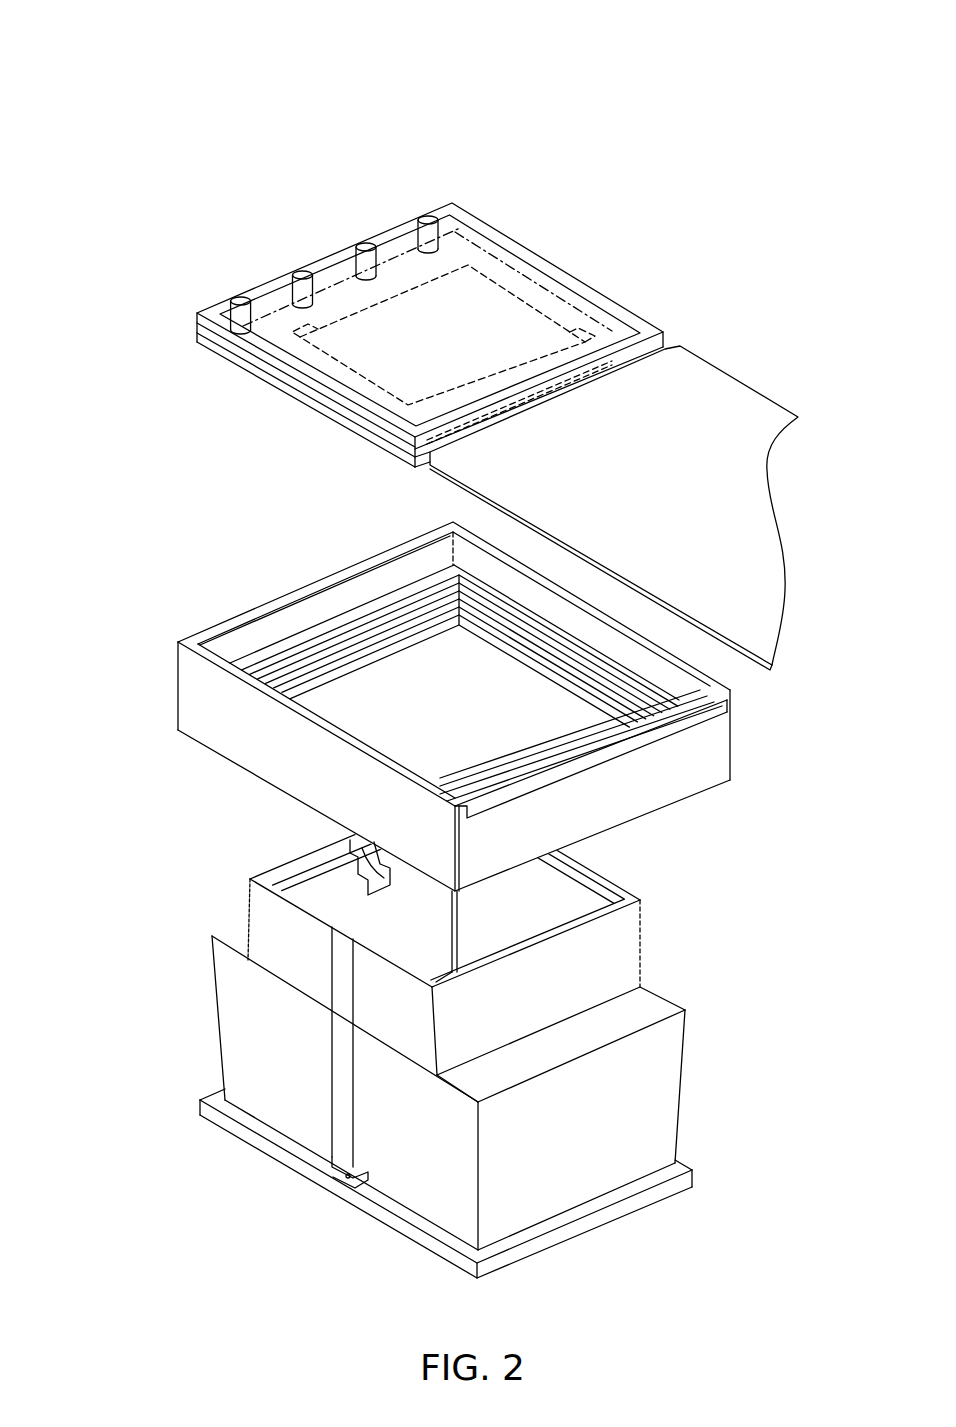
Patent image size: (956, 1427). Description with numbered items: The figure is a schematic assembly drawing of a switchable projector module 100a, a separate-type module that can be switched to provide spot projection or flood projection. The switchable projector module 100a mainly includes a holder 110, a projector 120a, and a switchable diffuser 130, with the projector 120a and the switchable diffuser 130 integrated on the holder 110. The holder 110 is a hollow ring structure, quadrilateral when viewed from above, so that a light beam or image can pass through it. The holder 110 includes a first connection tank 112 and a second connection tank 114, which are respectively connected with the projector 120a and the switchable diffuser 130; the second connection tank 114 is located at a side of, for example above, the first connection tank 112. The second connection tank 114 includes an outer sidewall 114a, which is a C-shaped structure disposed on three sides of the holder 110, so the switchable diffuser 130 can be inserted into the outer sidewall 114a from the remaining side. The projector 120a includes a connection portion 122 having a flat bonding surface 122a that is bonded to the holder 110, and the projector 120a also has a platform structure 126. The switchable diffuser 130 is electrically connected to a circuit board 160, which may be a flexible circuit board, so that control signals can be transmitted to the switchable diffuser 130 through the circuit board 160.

The switchable projector module 100a is at (141, 61).
The switchable diffuser 130 is at (515, 310).
The circuit board 160 is at (716, 393).
The holder 110 is at (725, 760).
The second connection tank 114 is at (326, 606).
The outer sidewall 114a is at (237, 620).
The first connection tank 112 is at (592, 692).
The projector 120a is at (680, 1098).
The connection portion 122 is at (262, 903).
The bonding surface 122a is at (262, 876).
The platform structure 126 is at (650, 998).